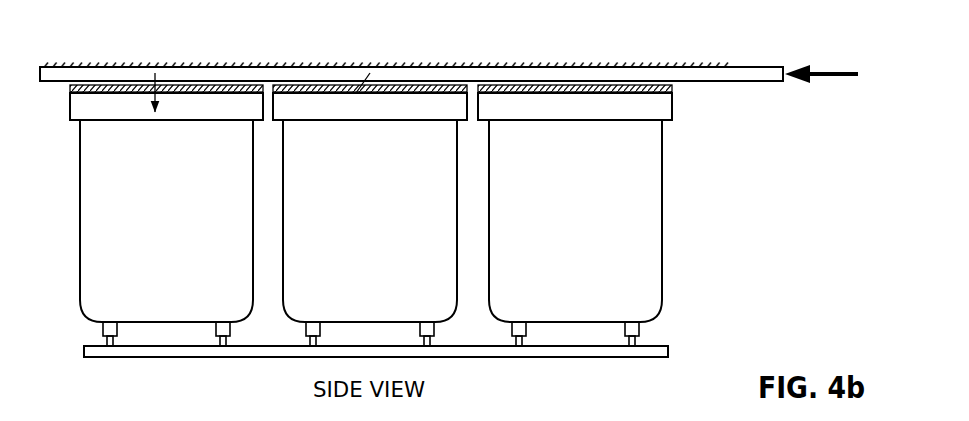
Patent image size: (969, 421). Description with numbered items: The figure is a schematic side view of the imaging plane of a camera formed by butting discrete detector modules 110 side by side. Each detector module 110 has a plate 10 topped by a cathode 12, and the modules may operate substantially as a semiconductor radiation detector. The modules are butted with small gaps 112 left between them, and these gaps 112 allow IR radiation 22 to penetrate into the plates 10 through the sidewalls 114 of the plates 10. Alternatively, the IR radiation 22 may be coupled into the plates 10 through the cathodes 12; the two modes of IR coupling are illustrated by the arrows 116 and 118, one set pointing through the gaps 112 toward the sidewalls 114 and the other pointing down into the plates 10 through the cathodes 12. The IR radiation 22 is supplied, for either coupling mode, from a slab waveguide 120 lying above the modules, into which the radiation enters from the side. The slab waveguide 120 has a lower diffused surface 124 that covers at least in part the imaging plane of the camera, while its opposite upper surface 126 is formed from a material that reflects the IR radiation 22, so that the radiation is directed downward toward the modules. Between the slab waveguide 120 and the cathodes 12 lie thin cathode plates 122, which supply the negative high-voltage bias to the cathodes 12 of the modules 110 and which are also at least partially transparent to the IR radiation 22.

The plate 10 is at (214, 121).
The cathode 12 is at (673, 91).
The IR radiation 22 is at (843, 78).
The detector module 110 is at (681, 265).
The gap 112 is at (270, 118).
The sidewall 114 is at (466, 101).
The arrow 116 is at (168, 90).
The arrow 118 is at (287, 112).
The slab waveguide 120 is at (437, 76).
The cathode plate 122 is at (673, 89).
The lower diffused surface 124 is at (53, 82).
The upper surface 126 is at (112, 66).